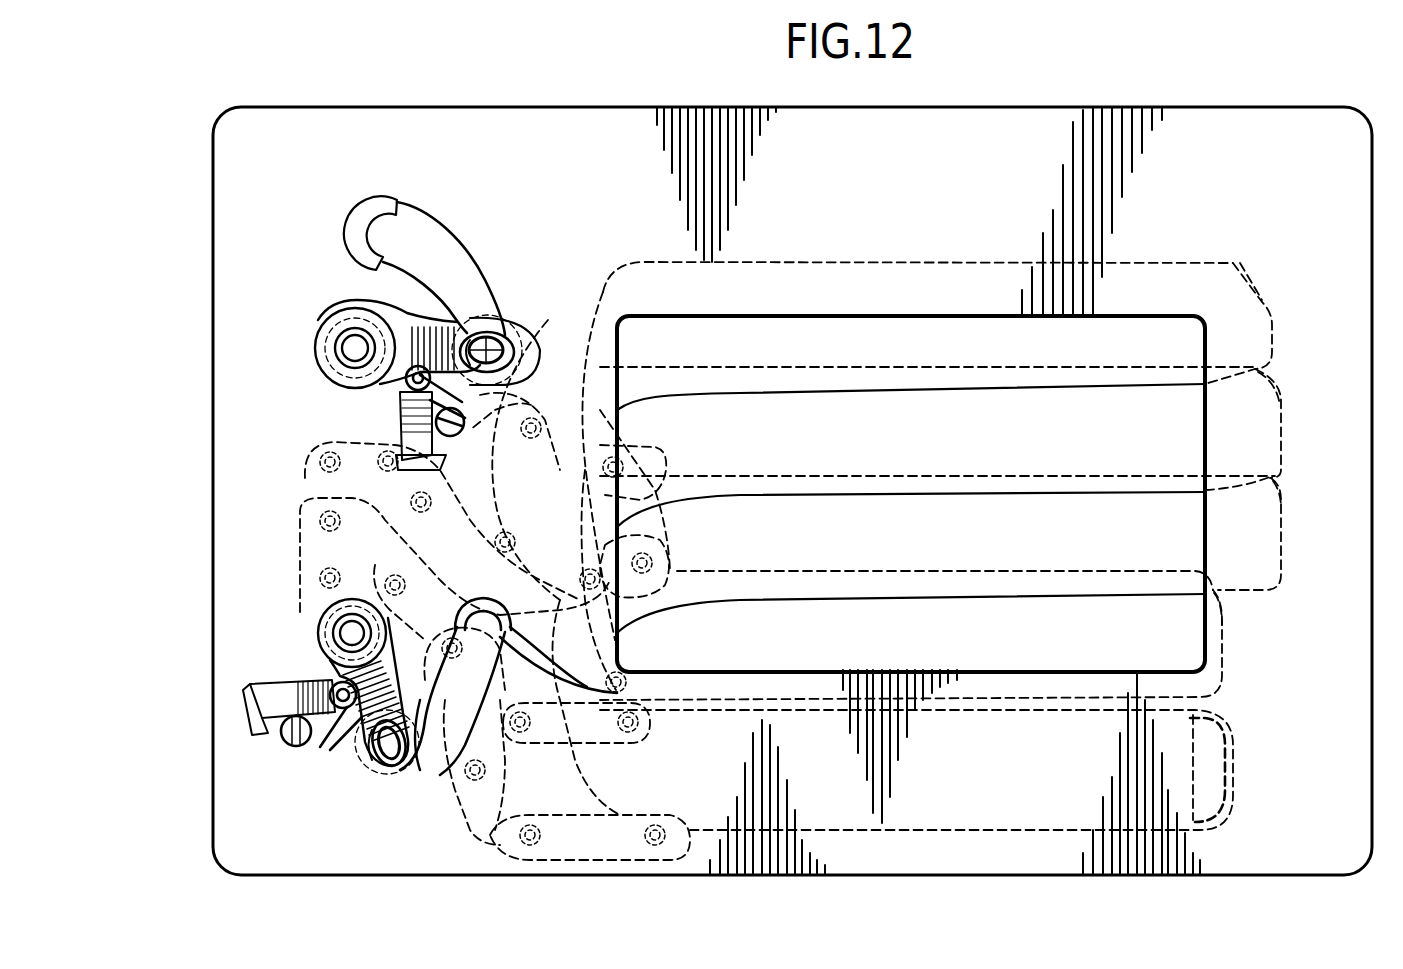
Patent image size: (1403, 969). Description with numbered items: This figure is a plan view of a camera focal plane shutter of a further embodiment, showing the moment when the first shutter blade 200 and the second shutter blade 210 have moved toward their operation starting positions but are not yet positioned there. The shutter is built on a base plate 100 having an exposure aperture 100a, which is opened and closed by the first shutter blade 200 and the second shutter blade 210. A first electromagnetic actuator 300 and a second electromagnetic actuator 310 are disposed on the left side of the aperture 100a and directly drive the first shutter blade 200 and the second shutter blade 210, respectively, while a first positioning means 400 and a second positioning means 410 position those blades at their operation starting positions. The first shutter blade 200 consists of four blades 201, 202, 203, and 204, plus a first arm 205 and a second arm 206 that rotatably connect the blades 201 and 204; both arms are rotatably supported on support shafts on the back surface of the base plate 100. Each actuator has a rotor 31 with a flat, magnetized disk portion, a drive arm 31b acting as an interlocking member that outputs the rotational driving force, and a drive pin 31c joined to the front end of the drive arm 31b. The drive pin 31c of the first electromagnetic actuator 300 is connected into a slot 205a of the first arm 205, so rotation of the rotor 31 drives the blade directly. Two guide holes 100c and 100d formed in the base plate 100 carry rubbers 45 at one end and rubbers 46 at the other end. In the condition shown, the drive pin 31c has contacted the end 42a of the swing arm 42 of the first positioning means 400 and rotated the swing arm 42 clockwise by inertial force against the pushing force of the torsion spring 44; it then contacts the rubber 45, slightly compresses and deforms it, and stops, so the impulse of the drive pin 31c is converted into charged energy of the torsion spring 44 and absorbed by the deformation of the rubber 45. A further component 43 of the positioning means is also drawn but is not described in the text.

The base plate 100 is at (1032, 108).
The exposure aperture 100a is at (965, 318).
The guide hole 100c is at (472, 266).
The guide hole 100d is at (436, 750).
The first shutter blade 200 is at (1124, 255).
The blade 201 is at (1268, 296).
The blade 202 is at (1283, 447).
The blade 203 is at (1283, 554).
The blade 204 is at (1222, 647).
The first arm 205 is at (666, 450).
The slot 205a is at (524, 345).
The second arm 206 is at (670, 542).
The second shutter blade 210 is at (1238, 759).
The first electromagnetic actuator 300 is at (310, 302).
The second electromagnetic actuator 310 is at (306, 603).
The first positioning means 400 is at (242, 396).
The second positioning means 410 is at (231, 659).
The rotor 31 is at (315, 342).
The drive arm 31b is at (415, 327).
The drive pin 31c is at (500, 312).
The swing arm 42 is at (406, 381).
The end of swing arm 42a is at (552, 345).
The screw 43 is at (398, 436).
The torsion spring 44 is at (398, 413).
The rubber 45 is at (540, 335).
The rubber 46 is at (398, 212).